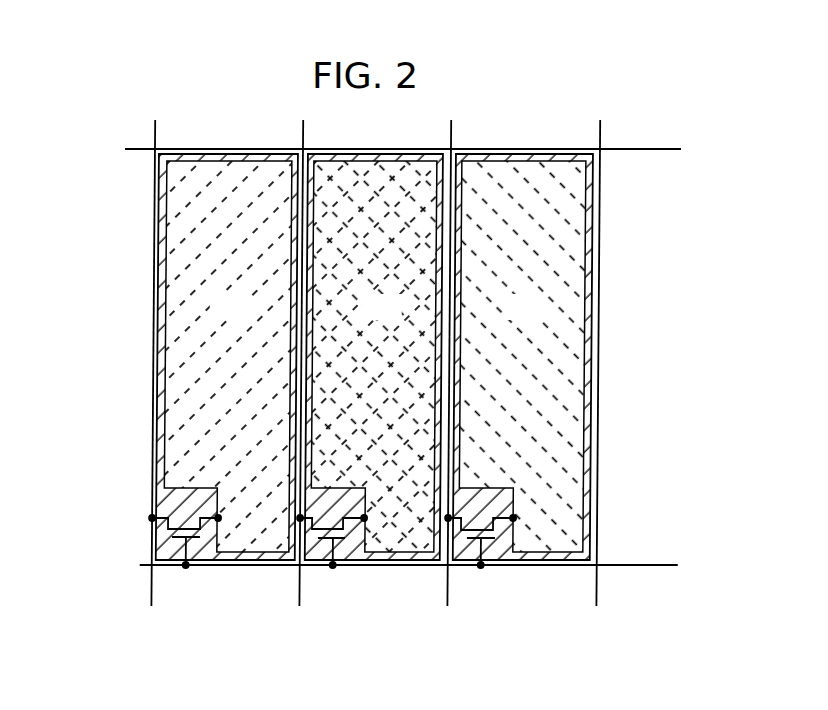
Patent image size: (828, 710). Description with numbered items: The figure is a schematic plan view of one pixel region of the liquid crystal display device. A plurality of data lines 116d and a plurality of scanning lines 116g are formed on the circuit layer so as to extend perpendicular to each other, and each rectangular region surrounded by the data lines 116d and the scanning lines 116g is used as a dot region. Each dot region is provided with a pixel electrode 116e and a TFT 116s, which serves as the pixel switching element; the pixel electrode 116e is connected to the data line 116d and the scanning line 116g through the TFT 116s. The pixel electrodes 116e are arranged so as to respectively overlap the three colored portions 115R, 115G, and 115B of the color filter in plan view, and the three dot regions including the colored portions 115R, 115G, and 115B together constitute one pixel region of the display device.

The colored portion 115R is at (158, 245).
The colored portion 115G is at (418, 562).
The colored portion 115B is at (592, 471).
The scanning line 116g is at (647, 149).
The data line 116d is at (152, 583).
The TFT 116s is at (181, 514).
The pixel electrode 116e is at (178, 394).